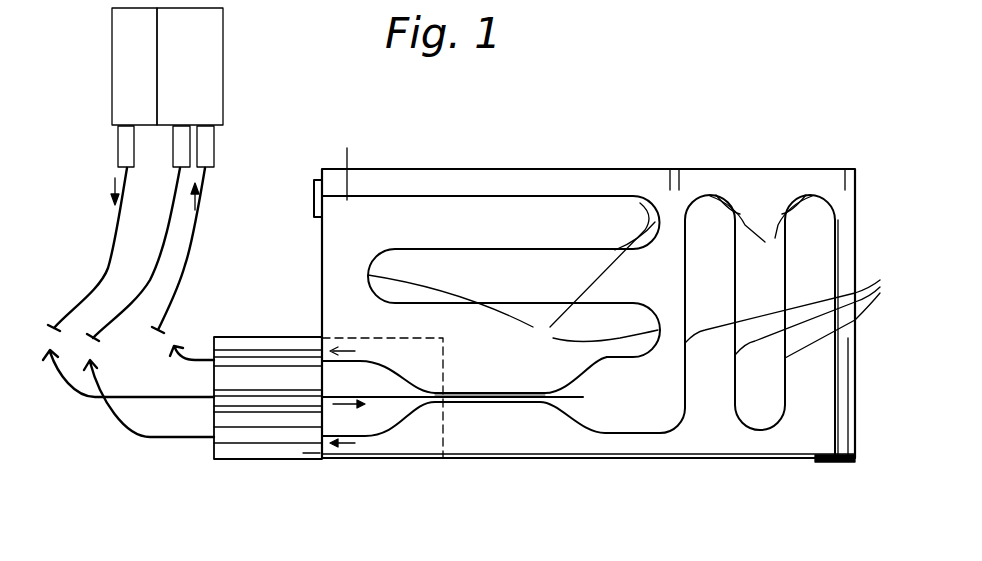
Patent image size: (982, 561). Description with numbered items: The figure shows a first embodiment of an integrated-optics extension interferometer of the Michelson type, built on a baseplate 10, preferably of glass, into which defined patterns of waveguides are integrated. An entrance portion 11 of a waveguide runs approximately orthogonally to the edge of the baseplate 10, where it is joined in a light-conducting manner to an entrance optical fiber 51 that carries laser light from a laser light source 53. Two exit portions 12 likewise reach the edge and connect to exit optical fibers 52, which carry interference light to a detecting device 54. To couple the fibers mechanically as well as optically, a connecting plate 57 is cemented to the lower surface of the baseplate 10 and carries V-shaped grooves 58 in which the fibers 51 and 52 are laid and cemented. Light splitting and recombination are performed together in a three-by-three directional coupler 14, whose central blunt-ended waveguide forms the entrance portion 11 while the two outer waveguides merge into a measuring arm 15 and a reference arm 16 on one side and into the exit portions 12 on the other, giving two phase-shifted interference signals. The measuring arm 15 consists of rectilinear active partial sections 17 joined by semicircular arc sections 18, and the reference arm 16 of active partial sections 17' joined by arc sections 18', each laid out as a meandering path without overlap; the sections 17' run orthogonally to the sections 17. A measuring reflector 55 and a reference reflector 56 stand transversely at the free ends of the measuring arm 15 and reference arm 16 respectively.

The baseplate 10 is at (685, 438).
The entrance portion 11 is at (400, 398).
The exit portions 12 is at (352, 351).
The 3 x 3 directional coupler 14 is at (515, 410).
The measuring arm 15 is at (843, 190).
The reference arm 16 is at (670, 190).
The active partial sections 17 is at (790, 306).
The active partial sections 17' is at (513, 272).
The semicircular arc sections 18 is at (759, 366).
The semicircular arc sections 18' is at (537, 340).
The entrance optical fiber 51 is at (137, 400).
The exit optical fibers 52 is at (190, 257).
The laser light source 53 is at (130, 78).
The detecting device 54 is at (213, 78).
The measuring reflector 55 is at (848, 462).
The reference reflector 56 is at (316, 192).
The connecting plate 57 is at (228, 460).
The V-shaped grooves 58 is at (278, 430).